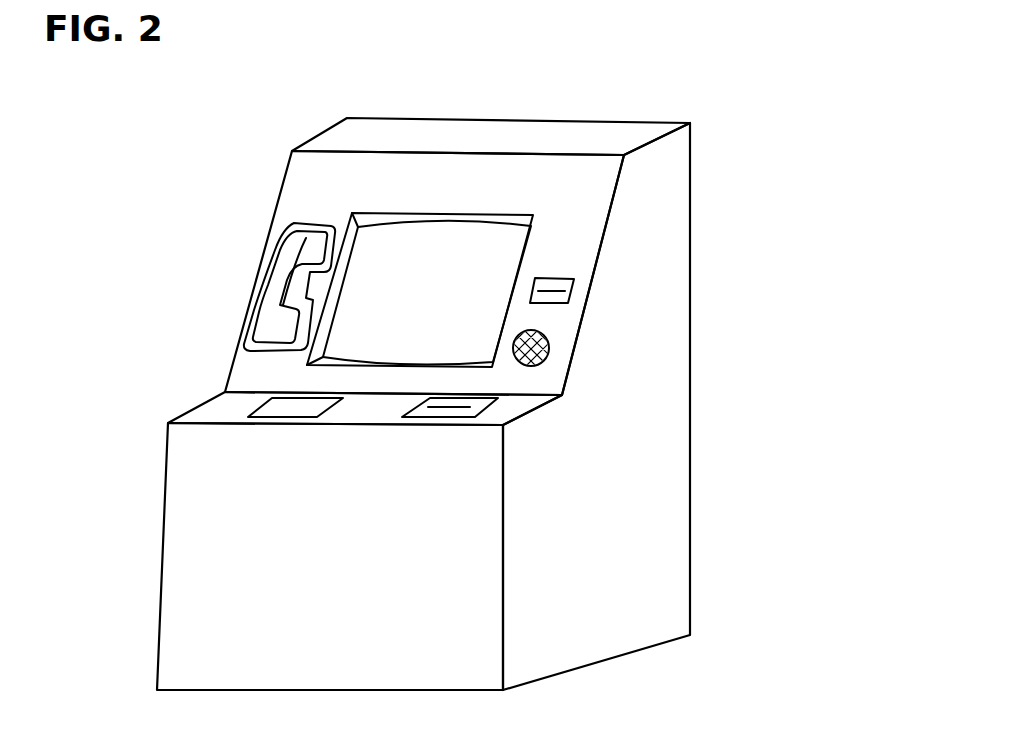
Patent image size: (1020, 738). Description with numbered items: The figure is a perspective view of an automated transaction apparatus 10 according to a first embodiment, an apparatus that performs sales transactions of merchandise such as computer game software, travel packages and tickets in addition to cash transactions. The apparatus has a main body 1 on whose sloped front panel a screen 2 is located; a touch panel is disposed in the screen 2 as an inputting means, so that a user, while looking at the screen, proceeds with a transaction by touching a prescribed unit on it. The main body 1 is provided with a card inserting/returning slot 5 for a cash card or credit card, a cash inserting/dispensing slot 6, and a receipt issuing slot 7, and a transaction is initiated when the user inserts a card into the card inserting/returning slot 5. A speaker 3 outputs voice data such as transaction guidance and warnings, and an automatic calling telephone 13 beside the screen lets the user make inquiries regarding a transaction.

The automated transaction apparatus 10 is at (650, 103).
The main body 1 is at (690, 263).
The screen 2 is at (350, 332).
The speaker 3 is at (549, 345).
The card inserting/returning slot 5 is at (574, 291).
The cash inserting/dispensing slot 6 is at (250, 411).
The receipt issuing slot 7 is at (480, 412).
The automatic calling telephone 13 is at (283, 255).